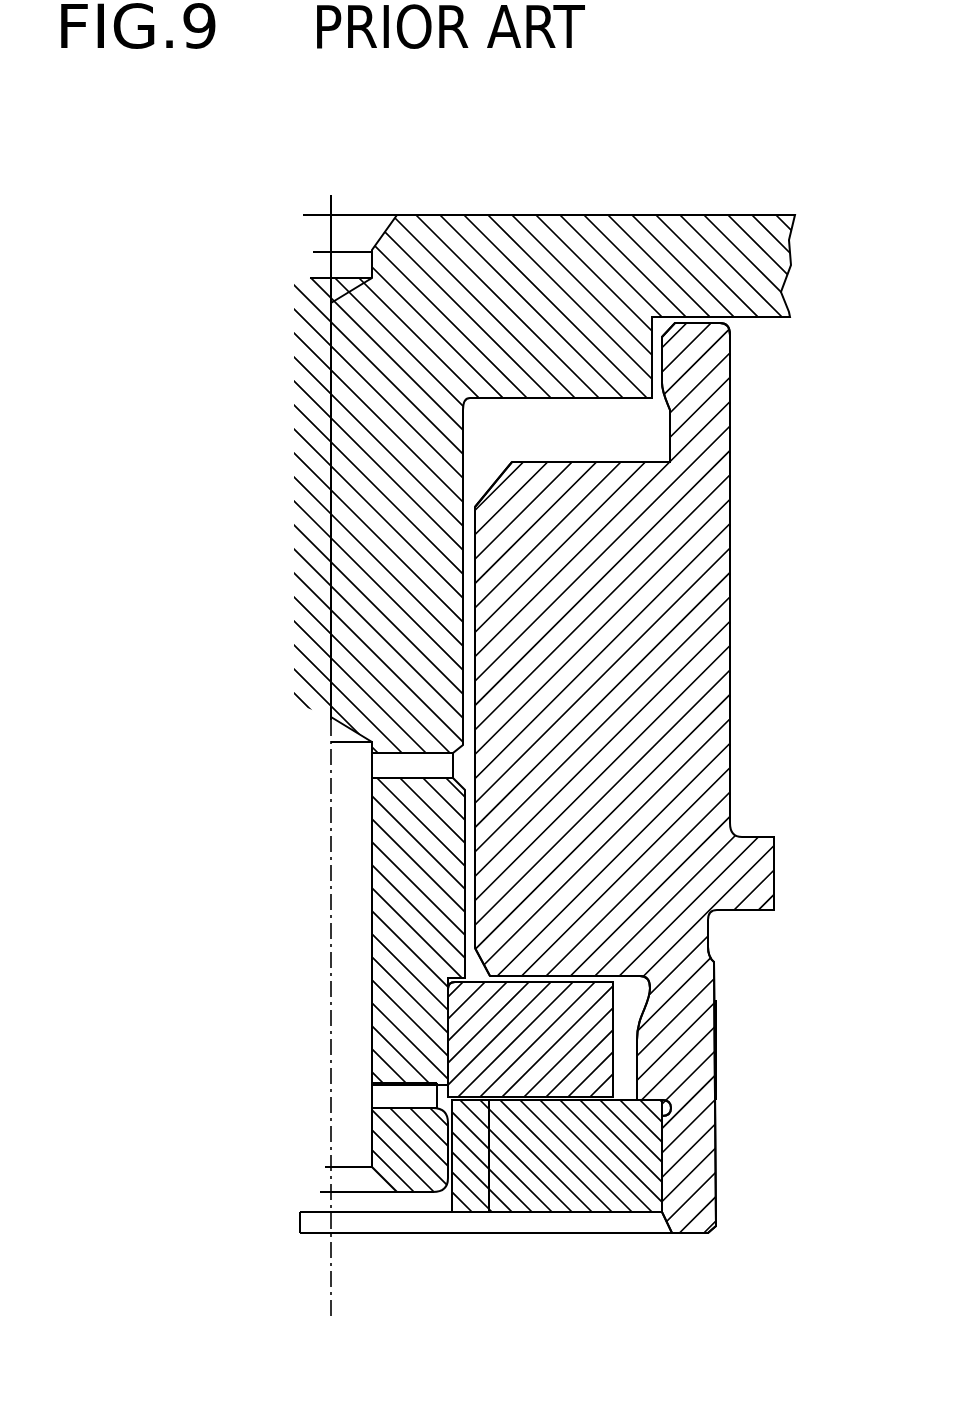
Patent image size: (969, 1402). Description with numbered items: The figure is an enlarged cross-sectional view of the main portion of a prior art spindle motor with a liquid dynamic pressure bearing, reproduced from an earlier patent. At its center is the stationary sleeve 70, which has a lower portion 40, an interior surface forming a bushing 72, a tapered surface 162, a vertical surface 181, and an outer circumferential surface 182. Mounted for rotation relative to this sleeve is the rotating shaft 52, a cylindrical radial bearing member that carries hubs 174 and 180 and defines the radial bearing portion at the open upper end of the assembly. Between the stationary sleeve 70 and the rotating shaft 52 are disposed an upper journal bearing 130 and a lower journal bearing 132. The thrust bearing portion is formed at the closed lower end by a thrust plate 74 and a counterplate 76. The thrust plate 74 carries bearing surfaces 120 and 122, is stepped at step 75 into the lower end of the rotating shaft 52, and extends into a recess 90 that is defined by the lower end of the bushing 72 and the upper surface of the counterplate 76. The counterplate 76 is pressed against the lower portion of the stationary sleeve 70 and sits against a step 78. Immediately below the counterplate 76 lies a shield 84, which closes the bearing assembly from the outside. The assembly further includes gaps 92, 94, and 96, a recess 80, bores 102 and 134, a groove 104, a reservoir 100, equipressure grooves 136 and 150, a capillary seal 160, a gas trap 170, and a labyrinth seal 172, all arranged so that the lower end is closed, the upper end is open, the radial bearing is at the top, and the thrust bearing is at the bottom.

The lower portion 40 is at (696, 1030).
The rotating shaft 52 is at (415, 637).
The stationary sleeve 70 is at (615, 685).
The bushing 72 is at (478, 616).
The thrust plate 74 is at (540, 1055).
The step 75 is at (452, 978).
The counterplate 76 is at (573, 1177).
The step 78 is at (667, 1098).
The recess 80 is at (672, 1107).
The shield 84 is at (377, 1233).
The recess 90 is at (630, 993).
The gap 92 is at (567, 978).
The gap 94 is at (712, 1047).
The gap 96 is at (489, 1212).
The reservoir 100 is at (353, 1100).
The bore 102 is at (356, 1136).
The groove 104 is at (453, 1193).
The bearing surface 120 is at (534, 999).
The bearing surface 122 is at (530, 1077).
The upper journal bearing 130 is at (464, 672).
The lower journal bearing 132 is at (466, 813).
The bore 134 is at (395, 765).
The equipressure groove 136 is at (468, 770).
The equipressure groove 150 is at (481, 958).
The capillary seal 160 is at (530, 445).
The tapered surface 162 is at (483, 497).
The gas trap 170 is at (642, 445).
The labyrinth seal 172 is at (652, 358).
The hub 174 is at (703, 317).
The hub 180 is at (527, 397).
The vertical surface 181 is at (600, 463).
The outer circumferential surface 182 is at (673, 423).